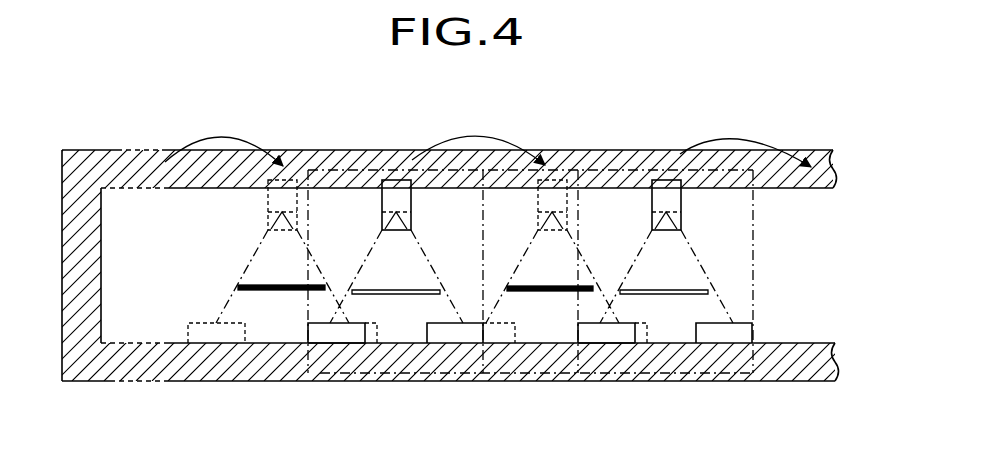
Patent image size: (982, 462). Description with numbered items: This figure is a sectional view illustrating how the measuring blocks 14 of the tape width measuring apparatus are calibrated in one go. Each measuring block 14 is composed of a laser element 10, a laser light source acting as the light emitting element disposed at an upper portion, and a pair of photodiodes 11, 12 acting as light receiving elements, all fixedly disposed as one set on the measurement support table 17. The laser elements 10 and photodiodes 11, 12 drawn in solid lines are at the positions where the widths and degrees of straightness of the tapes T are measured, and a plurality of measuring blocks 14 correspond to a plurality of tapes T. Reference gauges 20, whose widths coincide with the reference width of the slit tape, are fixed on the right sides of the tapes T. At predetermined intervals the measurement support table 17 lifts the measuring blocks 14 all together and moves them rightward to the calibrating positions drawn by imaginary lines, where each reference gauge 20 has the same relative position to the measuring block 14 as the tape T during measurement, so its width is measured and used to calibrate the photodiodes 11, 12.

The laser element 10 is at (394, 180).
The photodiode 11 is at (450, 338).
The photodiode 12 is at (337, 337).
The measuring block 14 is at (322, 163).
The measurement support table 17 is at (810, 167).
The reference gauge 20 is at (280, 291).
The tape T is at (397, 295).